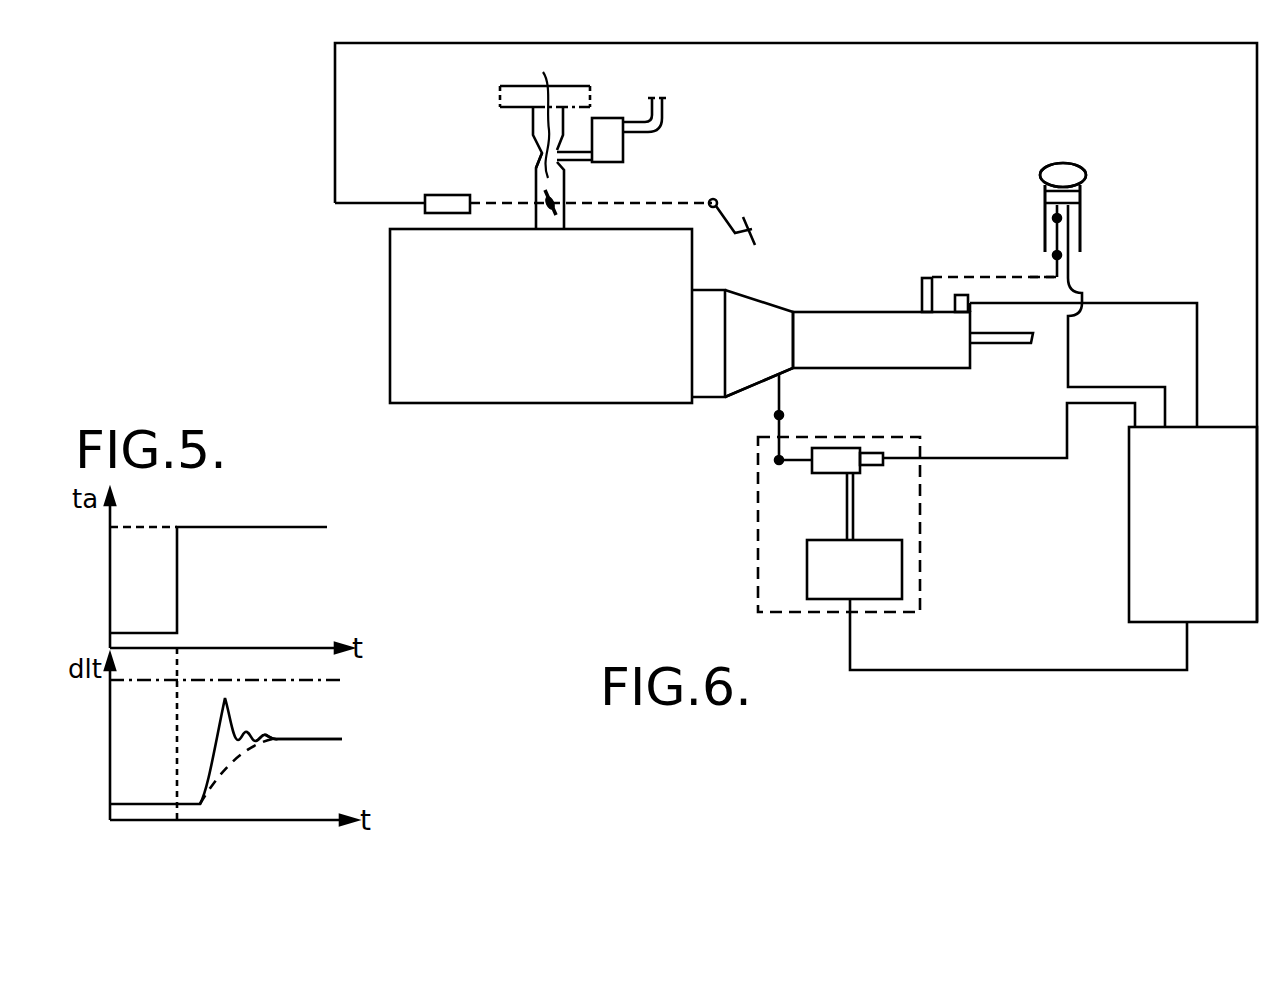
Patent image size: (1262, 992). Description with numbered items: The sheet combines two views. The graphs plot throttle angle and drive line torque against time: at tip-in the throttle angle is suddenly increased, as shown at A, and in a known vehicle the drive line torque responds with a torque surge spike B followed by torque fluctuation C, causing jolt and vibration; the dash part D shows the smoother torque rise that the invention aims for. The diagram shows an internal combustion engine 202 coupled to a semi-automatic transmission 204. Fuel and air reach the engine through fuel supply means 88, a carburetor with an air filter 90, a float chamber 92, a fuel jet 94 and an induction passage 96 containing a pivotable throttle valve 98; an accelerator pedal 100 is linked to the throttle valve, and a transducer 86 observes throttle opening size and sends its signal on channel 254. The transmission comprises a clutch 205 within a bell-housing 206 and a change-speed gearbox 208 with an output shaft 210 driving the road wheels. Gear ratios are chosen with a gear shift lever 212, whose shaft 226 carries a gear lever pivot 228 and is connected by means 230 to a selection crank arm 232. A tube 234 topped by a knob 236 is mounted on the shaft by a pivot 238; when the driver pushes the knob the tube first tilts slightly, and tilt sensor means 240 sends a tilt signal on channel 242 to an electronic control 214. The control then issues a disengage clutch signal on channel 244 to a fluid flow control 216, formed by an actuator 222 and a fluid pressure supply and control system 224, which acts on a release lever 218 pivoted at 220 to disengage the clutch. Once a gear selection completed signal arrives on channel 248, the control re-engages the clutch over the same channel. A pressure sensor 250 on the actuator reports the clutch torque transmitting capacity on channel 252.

In FIG. 5, the sudden increase in throttle angle A is at (178, 583).
In FIG. 5, the torque surge spike B is at (222, 698).
In FIG. 5, the torque fluctuation C is at (258, 736).
In FIG. 5, the dash part D is at (243, 750).
In FIG. 6, the transducer 86 is at (437, 197).
In FIG. 6, the fuel supply means 88 is at (505, 147).
In FIG. 6, the air filter 90 is at (512, 92).
In FIG. 6, the float chamber 92 is at (610, 118).
In FIG. 6, the fuel jet 94 is at (543, 74).
In FIG. 6, the induction passage 96 is at (535, 158).
In FIG. 6, the throttle valve 98 is at (550, 193).
In FIG. 6, the accelerator pedal 100 is at (757, 212).
In FIG. 6, the internal combustion engine 202 is at (518, 311).
In FIG. 6, the semi-automatic transmission 204 is at (950, 178).
In FIG. 6, the clutch 205 is at (750, 290).
In FIG. 6, the bell-housing 206 is at (742, 398).
In FIG. 6, the change-speed gearbox 208 is at (946, 368).
In FIG. 6, the output shaft 210 is at (993, 335).
In FIG. 6, the gear shift lever 212 is at (1090, 155).
In FIG. 6, the electronic control 214 is at (1172, 545).
In FIG. 6, the fluid flow control 216 is at (930, 520).
In FIG. 6, the release lever 218 is at (782, 389).
In FIG. 6, the pivot 220 is at (775, 418).
In FIG. 6, the actuator 222 is at (812, 473).
In FIG. 6, the fluid pressure supply and control system 224 is at (830, 586).
In FIG. 6, the shaft 226 is at (1050, 273).
In FIG. 6, the gear lever pivot 228 is at (1061, 256).
In FIG. 6, the means for conveying movement 230 is at (962, 272).
In FIG. 6, the selection crank arm 232 is at (920, 290).
In FIG. 6, the tube 234 is at (1045, 226).
In FIG. 6, the knob 236 is at (1070, 163).
In FIG. 6, the pivot 238 is at (1082, 229).
In FIG. 6, the tilt sensor means 240 is at (1076, 200).
In FIG. 6, the channel 242 is at (1098, 387).
In FIG. 6, the channel 244 is at (996, 670).
In FIG. 6, the channel 248 is at (1172, 303).
In FIG. 6, the pressure sensor 250 is at (883, 465).
In FIG. 6, the channel 252 is at (957, 458).
In FIG. 6, the channel 254 is at (1092, 45).